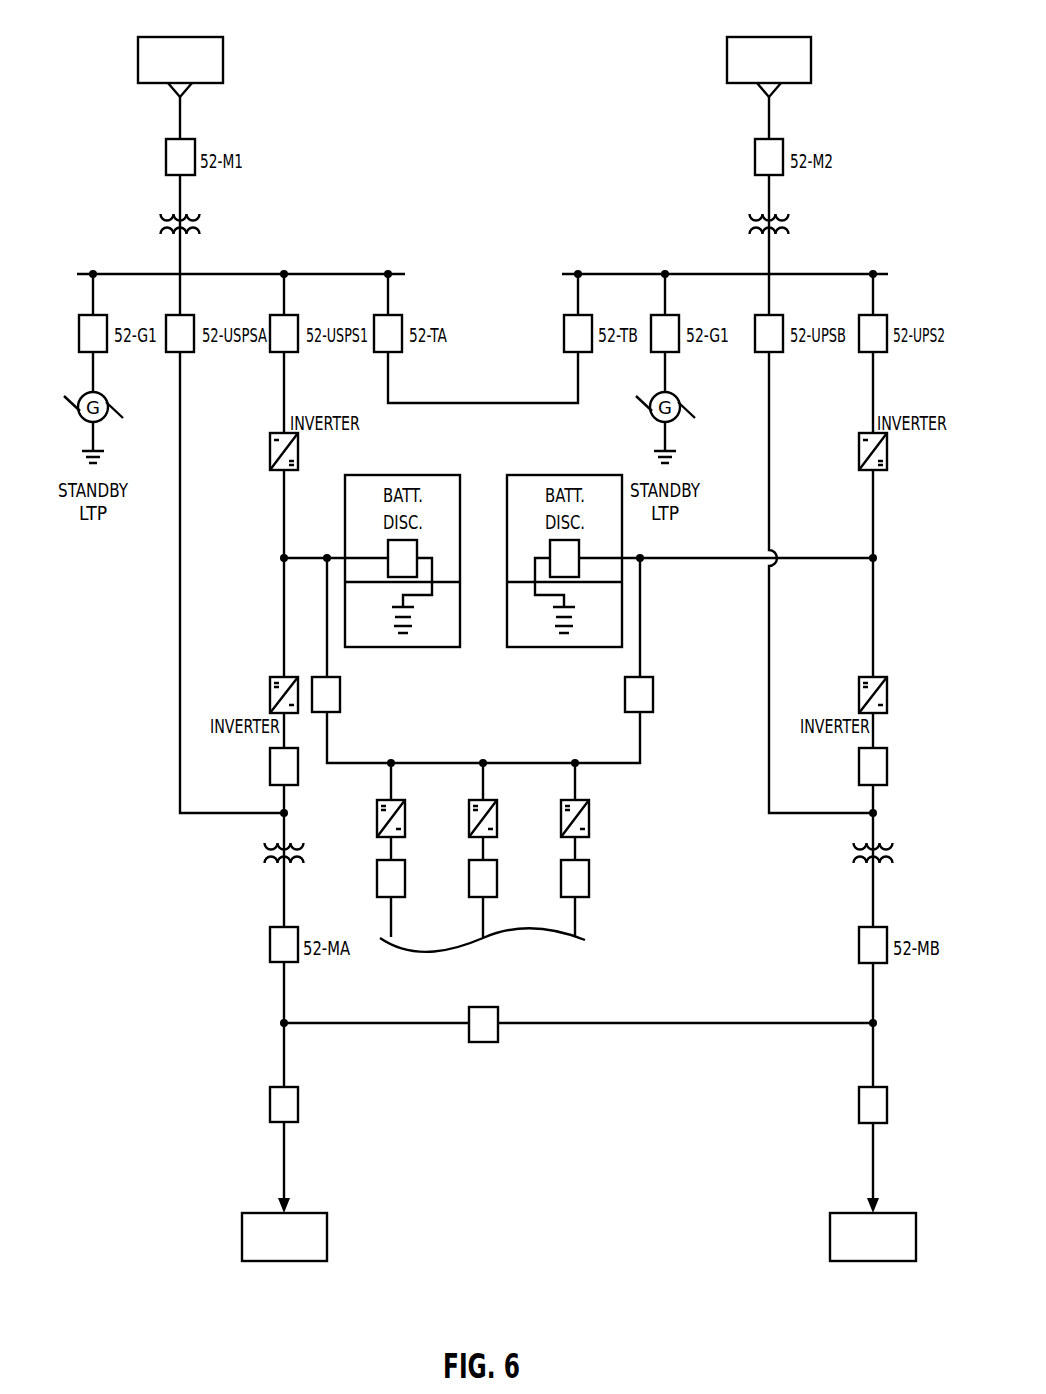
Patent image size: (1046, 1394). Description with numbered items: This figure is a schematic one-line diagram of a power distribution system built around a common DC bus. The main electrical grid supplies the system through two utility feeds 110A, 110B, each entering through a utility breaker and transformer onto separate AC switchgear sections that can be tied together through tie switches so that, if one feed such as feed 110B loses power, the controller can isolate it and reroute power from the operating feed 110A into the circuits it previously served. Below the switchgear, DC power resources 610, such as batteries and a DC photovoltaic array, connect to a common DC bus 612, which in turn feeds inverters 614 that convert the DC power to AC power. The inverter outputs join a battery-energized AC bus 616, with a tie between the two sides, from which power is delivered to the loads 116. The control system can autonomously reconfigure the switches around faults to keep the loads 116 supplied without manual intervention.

The utility feed 110A is at (165, 37).
The utility feed 110B is at (790, 37).
The load 116 is at (259, 1213).
The DC power resources 610 is at (540, 968).
The common DC bus 612 is at (621, 777).
The inverter 614 is at (270, 677).
The AC bus 616 is at (621, 1036).